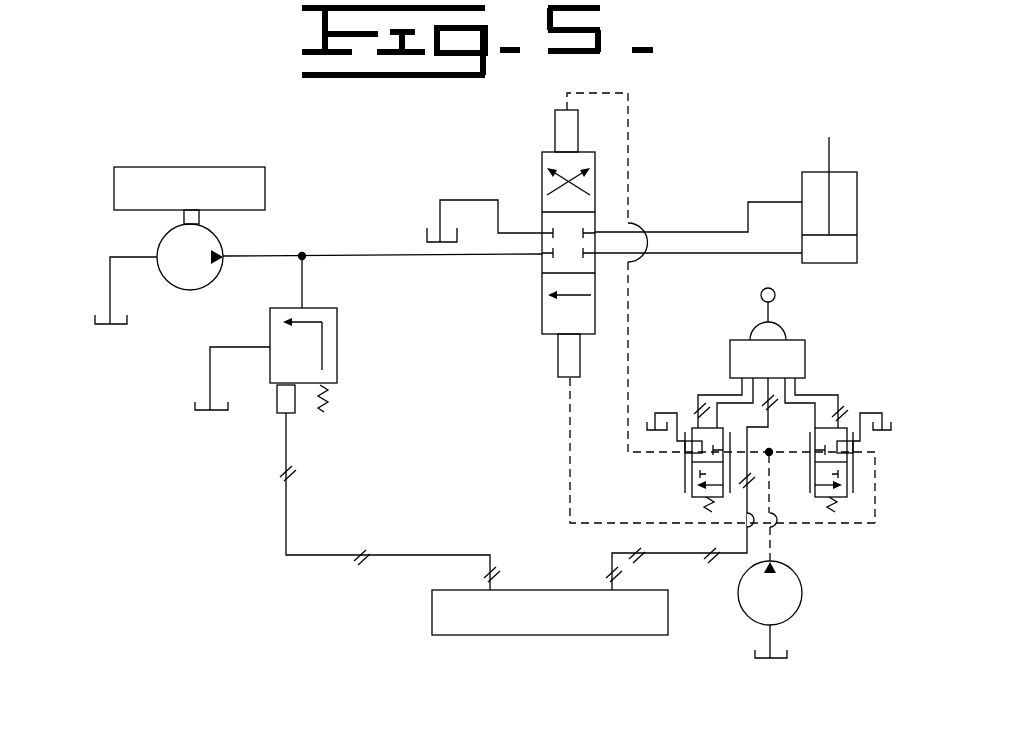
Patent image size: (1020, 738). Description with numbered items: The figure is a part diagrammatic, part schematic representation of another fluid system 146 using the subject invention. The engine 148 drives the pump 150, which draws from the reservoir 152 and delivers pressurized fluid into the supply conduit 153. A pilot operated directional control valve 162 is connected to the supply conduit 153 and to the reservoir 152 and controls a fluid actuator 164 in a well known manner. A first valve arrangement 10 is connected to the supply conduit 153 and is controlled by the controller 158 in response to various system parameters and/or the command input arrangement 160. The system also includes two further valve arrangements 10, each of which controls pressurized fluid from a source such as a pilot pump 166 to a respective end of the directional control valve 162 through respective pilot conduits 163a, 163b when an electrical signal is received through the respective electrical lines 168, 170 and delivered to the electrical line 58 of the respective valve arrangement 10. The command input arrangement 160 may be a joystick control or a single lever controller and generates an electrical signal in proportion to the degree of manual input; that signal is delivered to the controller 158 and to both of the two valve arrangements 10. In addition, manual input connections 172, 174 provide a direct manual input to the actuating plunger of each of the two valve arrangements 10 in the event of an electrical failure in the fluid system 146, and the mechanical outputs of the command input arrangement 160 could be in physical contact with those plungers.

The fluid system 146 is at (157, 122).
The engine 148 is at (114, 190).
The pump 150 is at (157, 247).
The reservoir 152 is at (110, 328).
The supply conduit 153 is at (277, 254).
The valve arrangement 10 is at (366, 347).
The electrical line 58 is at (287, 513).
The controller 158 is at (432, 613).
The pilot operated directional control valve 162 is at (542, 163).
The fluid actuator 164 is at (802, 194).
The pilot conduit 163a is at (631, 306).
The pilot conduit 163b is at (570, 502).
The command input arrangement 160 is at (800, 340).
The pilot pump 166 is at (802, 587).
The electrical line 168 is at (735, 395).
The electrical line 170 is at (840, 403).
The manual input connection 172 is at (727, 397).
The manual input connection 174 is at (810, 403).